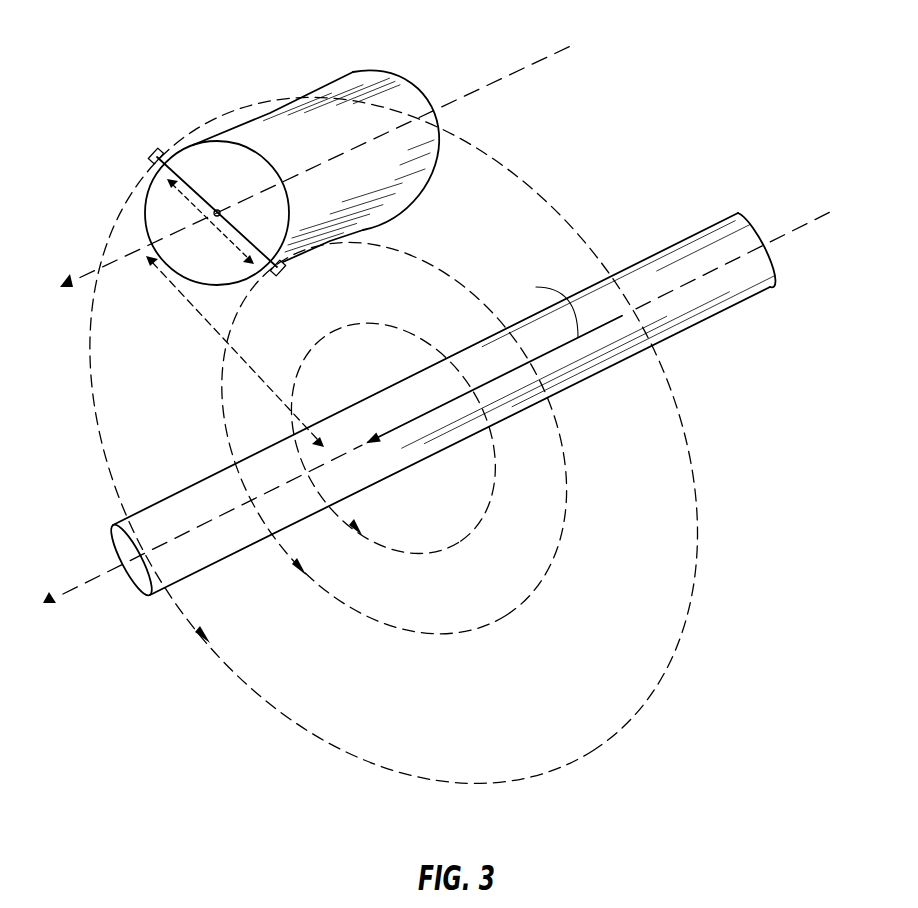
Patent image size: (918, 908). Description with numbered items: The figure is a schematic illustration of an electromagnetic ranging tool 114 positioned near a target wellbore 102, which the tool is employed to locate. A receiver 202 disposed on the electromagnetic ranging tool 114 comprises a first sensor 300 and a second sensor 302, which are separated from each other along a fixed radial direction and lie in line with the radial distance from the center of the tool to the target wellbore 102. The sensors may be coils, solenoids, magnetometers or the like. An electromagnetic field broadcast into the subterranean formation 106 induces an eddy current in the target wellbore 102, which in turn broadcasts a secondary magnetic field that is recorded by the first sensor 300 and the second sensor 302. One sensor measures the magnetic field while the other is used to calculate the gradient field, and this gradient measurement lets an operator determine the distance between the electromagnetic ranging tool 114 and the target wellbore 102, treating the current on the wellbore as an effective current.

The target wellbore 102 is at (711, 371).
The subterranean formation 106 is at (758, 644).
The electromagnetic ranging tool 114 is at (358, 78).
The receiver 202 is at (187, 117).
The first sensor 300 is at (155, 150).
The second sensor 302 is at (281, 273).